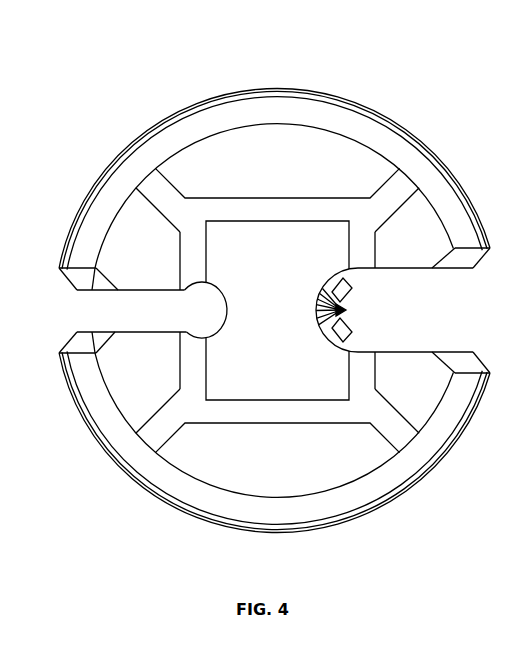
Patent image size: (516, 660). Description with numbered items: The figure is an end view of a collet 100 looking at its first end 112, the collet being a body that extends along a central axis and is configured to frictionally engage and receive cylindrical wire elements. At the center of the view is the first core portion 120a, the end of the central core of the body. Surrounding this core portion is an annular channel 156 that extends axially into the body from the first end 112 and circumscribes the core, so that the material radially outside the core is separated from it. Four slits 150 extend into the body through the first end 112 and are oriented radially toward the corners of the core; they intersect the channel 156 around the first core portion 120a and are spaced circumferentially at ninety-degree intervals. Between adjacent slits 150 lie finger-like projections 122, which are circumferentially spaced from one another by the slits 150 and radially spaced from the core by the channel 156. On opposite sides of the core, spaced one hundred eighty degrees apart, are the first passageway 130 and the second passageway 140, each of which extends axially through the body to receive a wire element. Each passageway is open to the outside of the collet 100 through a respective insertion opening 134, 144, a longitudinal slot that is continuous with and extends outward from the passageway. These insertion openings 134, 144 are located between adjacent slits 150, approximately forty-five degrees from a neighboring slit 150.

The collet 100 is at (118, 78).
The first end 112 is at (278, 142).
The annular channel 156 is at (238, 208).
The slits 150 is at (143, 172).
The finger-like projections 122 is at (280, 317).
The first core portion 120a is at (277, 310).
The insertion opening 144 is at (113, 290).
The second passageway 140 is at (187, 325).
The insertion opening 134 is at (404, 272).
The first passageway 130 is at (363, 328).